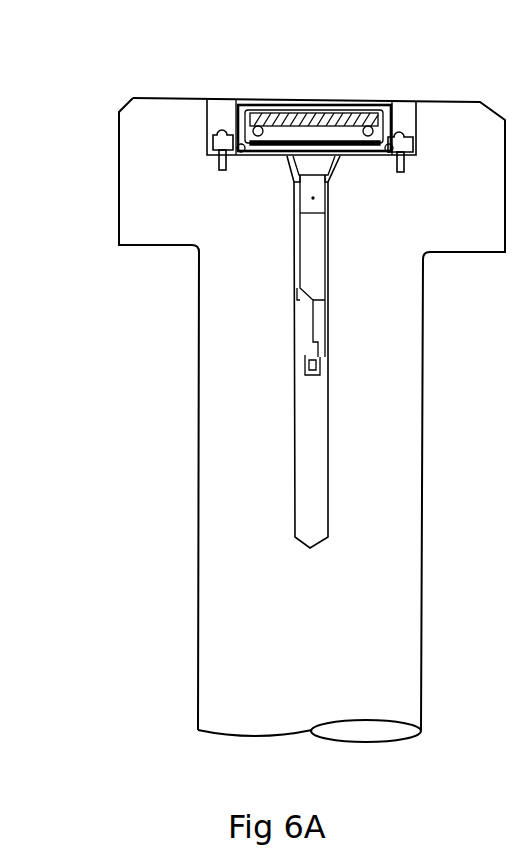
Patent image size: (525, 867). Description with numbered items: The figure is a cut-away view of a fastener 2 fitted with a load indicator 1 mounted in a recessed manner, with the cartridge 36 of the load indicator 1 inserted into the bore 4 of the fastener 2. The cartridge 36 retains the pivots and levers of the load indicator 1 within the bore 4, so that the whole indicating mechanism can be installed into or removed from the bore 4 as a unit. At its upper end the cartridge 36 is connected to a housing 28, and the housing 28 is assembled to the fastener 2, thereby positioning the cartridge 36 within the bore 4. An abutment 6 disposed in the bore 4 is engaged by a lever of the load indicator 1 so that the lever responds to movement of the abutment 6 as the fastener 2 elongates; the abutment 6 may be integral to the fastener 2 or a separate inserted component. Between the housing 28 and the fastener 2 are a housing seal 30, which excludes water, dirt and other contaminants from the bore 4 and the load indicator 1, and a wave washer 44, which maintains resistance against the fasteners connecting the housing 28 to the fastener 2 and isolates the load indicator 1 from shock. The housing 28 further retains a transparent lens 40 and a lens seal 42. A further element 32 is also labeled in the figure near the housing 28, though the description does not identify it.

The fastener 2 is at (134, 108).
The load indicator 1 is at (240, 110).
The bore 4 is at (300, 323).
The abutment 6 is at (326, 367).
The housing 28 is at (394, 103).
The housing seal 30 is at (393, 138).
The bracket 32 is at (212, 125).
The cartridge 36 is at (315, 268).
The transparent lens 40 is at (318, 105).
The lens seal 42 is at (268, 124).
The wave washer 44 is at (276, 120).